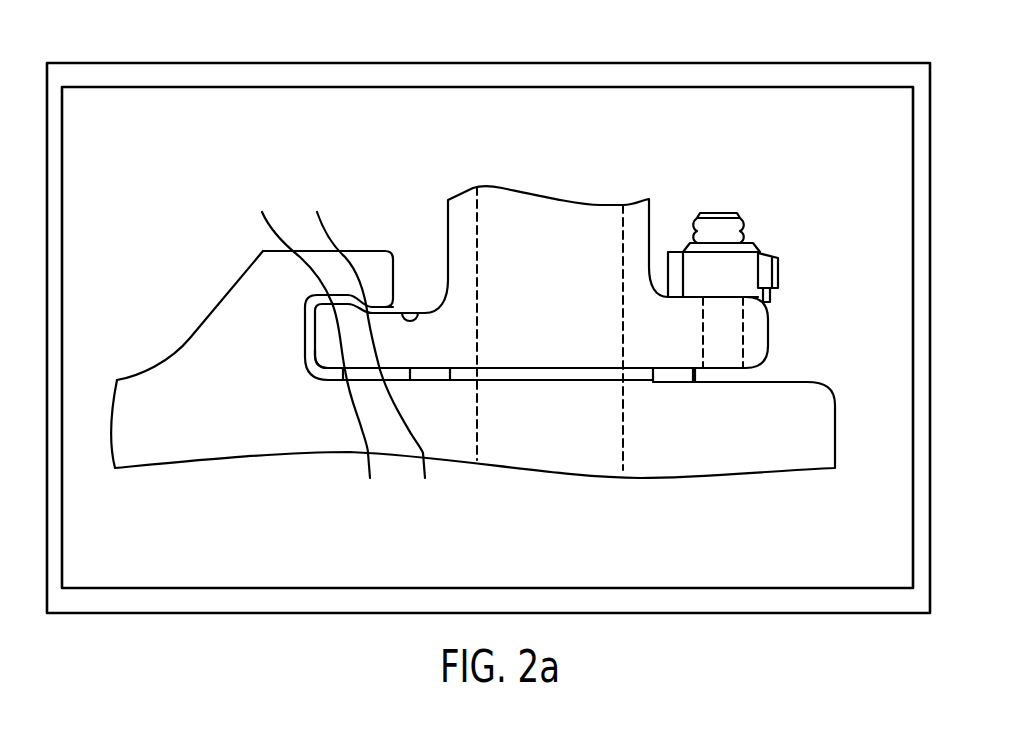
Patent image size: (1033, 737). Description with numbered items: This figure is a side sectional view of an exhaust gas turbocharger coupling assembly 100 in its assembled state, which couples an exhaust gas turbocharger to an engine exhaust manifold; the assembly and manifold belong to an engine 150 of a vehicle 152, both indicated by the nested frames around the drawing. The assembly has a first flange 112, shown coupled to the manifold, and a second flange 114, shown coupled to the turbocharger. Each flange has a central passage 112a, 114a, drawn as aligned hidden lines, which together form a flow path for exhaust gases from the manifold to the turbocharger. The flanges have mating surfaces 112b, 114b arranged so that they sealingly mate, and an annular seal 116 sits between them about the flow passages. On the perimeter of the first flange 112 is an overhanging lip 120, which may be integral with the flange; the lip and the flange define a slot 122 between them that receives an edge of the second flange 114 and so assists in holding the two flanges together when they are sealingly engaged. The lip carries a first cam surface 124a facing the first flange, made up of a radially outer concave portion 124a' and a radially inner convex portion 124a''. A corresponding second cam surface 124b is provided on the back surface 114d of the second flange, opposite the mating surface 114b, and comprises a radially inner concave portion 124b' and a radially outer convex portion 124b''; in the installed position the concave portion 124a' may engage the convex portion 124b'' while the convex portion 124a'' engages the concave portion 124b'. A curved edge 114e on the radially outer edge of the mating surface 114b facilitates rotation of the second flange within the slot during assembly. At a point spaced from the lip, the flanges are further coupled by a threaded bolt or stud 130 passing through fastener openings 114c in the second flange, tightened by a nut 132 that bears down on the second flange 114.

The exhaust gas turbocharger coupling assembly 100 is at (459, 179).
The first flange 112 is at (820, 425).
The passage 112a is at (478, 422).
The mating surface 112b is at (428, 383).
The second flange 114 is at (758, 345).
The passage 114a is at (478, 286).
The mating surface 114b is at (432, 365).
The fastener openings 114c is at (703, 333).
The back surface 114d is at (420, 313).
The curved edge 114e is at (315, 368).
The seal 116 is at (672, 383).
The overhanging lip 120 is at (363, 260).
The slot 122 is at (305, 343).
The first cam surface 124a is at (306, 255).
The concave portion 124a' is at (287, 244).
The convex portion 124a'' is at (331, 251).
The second cam surface 124b is at (392, 460).
The concave portion 124b' is at (425, 468).
The convex portion 124b'' is at (370, 467).
The bolt or stud 130 is at (732, 232).
The nut 132 is at (768, 272).
The engine 150 is at (150, 87).
The vehicle 152 is at (93, 63).